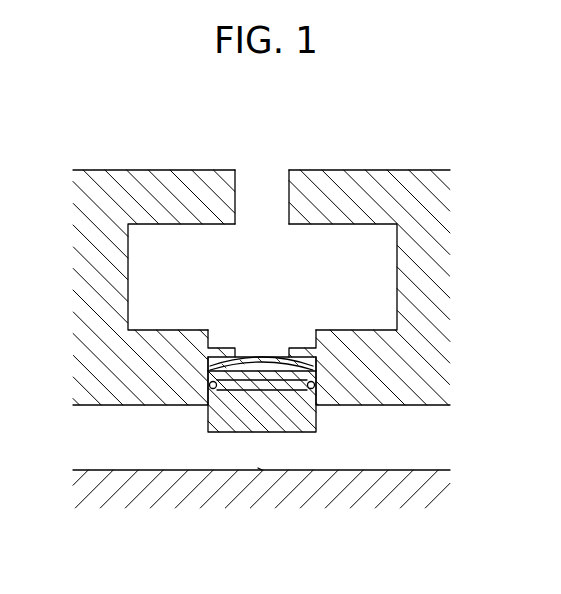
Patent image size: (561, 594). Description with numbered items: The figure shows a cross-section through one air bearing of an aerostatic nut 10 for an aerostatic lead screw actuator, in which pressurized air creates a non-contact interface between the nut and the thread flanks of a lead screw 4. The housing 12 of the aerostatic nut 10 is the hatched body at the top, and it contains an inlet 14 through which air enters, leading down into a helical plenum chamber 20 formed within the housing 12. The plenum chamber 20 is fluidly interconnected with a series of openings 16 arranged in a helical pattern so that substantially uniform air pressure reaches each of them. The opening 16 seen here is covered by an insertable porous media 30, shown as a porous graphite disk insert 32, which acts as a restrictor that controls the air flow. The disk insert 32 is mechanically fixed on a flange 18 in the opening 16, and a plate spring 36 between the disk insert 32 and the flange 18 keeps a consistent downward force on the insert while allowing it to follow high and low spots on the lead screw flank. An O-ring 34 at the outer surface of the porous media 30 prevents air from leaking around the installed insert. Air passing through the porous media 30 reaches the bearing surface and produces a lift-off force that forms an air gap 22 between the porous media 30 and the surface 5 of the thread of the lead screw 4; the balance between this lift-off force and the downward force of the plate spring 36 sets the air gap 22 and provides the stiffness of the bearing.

The aerostatic nut 10 is at (477, 190).
The housing 12 is at (424, 266).
The inlet 14 is at (262, 178).
The openings 16 is at (268, 338).
The flange 18 is at (262, 358).
The helical plenum chamber 20 is at (342, 198).
The air gap 22 is at (270, 457).
The porous media 30 is at (199, 419).
The porous media disk inserts 32 is at (270, 408).
The O-ring 34 is at (316, 383).
The plate spring 36 is at (222, 346).
The lead screw 4 is at (413, 488).
The surface 5 is at (410, 468).